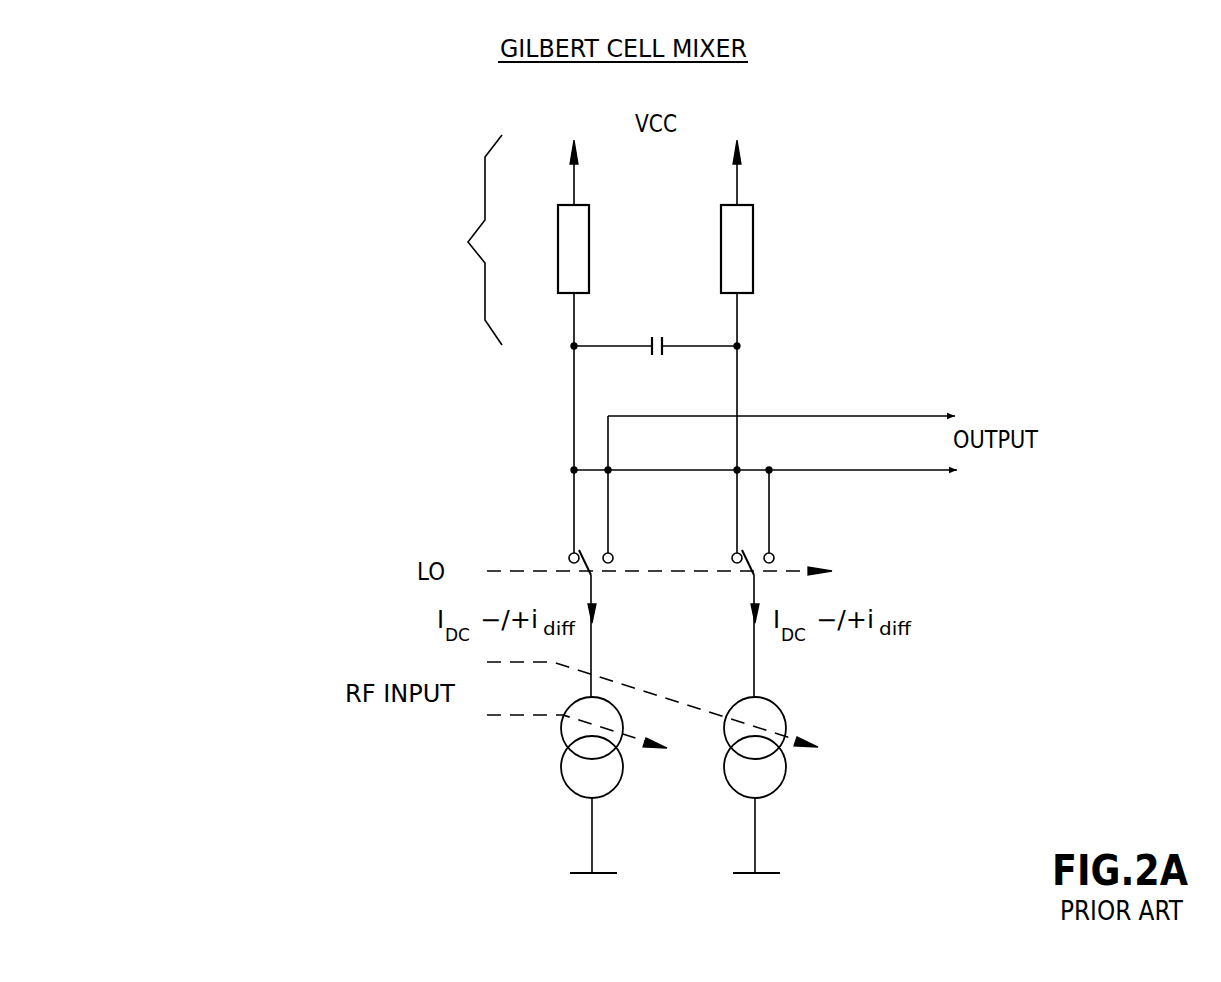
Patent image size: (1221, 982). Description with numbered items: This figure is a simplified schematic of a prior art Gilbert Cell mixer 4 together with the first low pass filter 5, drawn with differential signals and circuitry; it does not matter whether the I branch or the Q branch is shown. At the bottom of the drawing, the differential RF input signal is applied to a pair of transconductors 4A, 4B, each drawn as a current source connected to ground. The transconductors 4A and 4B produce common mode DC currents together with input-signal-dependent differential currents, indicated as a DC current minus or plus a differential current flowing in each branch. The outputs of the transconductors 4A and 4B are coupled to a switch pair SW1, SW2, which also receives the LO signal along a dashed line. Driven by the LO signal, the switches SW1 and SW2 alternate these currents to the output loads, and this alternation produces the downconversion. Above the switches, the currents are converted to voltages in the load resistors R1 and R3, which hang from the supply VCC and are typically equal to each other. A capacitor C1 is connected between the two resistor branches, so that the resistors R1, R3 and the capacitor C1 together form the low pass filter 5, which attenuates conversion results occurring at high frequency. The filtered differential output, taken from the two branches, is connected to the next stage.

The mixer 4 is at (352, 328).
The first LPF 5 is at (449, 240).
The transconductor 4A is at (563, 778).
The transconductor 4B is at (785, 776).
The resistor R1 is at (556, 249).
The resistor R3 is at (762, 249).
The capacitor C1 is at (655, 365).
The switch SW1 is at (560, 556).
The switch SW2 is at (794, 556).